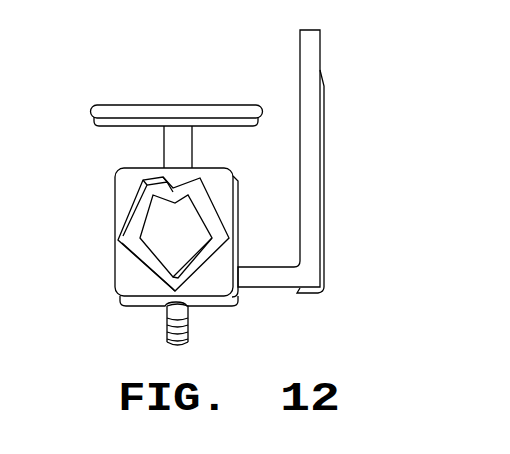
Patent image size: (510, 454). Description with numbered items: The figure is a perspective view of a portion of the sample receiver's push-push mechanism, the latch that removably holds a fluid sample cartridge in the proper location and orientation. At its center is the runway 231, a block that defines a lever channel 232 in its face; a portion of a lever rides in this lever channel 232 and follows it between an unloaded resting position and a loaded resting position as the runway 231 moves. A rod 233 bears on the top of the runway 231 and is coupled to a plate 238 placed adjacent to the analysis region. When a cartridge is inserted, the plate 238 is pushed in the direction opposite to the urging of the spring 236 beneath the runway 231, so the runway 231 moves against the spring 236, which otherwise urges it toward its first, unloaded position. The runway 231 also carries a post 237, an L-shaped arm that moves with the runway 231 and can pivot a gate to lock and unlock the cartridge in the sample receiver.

The runway 231 is at (123, 192).
The lever channel 232 is at (210, 217).
The rod 233 is at (168, 155).
The spring 236 is at (168, 338).
The post 237 is at (318, 223).
The plate 238 is at (228, 110).